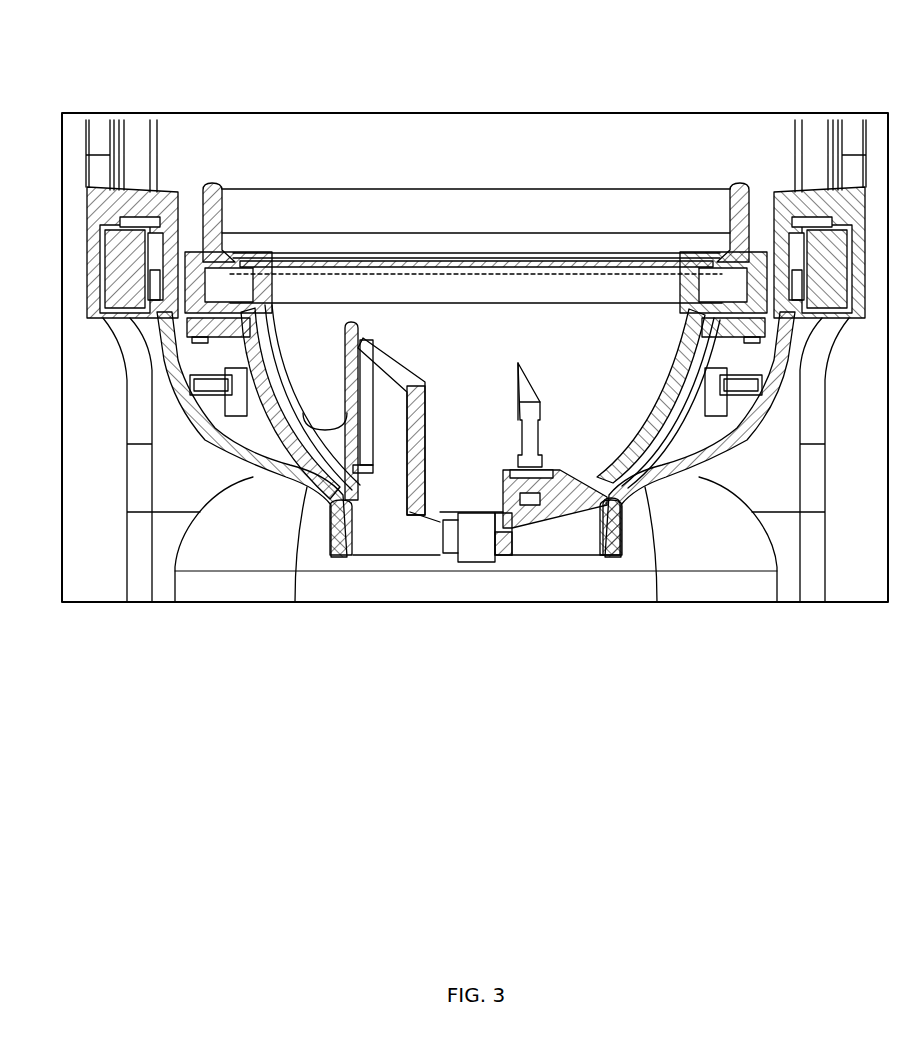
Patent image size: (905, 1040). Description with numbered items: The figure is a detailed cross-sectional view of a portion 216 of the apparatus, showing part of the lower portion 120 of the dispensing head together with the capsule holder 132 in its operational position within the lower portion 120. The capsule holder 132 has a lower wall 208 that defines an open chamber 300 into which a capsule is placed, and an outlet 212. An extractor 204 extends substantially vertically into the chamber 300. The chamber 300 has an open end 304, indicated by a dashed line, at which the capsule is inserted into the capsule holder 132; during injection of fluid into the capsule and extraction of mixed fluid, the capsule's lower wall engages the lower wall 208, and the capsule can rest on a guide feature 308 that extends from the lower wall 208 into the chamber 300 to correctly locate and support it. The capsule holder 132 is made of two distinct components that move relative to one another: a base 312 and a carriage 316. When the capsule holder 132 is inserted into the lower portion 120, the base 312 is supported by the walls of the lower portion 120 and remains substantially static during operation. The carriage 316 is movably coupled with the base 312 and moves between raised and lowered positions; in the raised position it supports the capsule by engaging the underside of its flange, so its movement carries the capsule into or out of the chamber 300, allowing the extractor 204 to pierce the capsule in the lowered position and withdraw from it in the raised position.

The lower portion 120 is at (167, 363).
The capsule holder 132 is at (417, 517).
The extractor 204 is at (533, 380).
The lower wall 208 is at (573, 498).
The outlet 212 is at (474, 553).
The portion 216 is at (672, 113).
The open chamber 300 is at (448, 371).
The open end 304 is at (364, 275).
The guide feature 308 is at (413, 383).
The base 312 is at (645, 443).
The carriage 316 is at (738, 188).